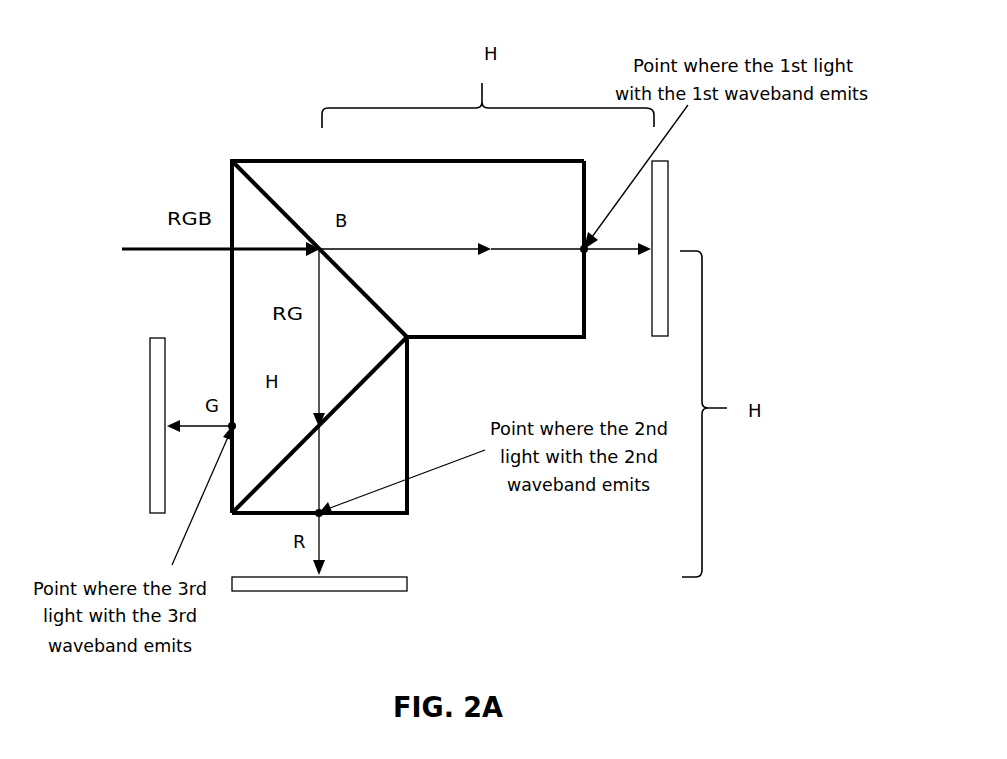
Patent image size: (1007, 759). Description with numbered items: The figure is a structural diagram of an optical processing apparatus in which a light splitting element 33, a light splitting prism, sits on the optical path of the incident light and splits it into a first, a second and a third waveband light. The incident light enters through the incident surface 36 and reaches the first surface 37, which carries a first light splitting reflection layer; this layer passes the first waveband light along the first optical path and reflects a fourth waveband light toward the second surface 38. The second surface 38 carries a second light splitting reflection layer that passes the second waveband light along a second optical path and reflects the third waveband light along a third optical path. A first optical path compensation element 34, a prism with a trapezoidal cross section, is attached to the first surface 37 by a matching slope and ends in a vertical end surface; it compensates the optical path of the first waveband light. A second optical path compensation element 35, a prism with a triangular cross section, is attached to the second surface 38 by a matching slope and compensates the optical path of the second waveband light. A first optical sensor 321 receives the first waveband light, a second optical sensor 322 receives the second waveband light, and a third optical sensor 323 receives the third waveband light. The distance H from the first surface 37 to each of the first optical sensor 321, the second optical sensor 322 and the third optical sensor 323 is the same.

The light splitting element 33 is at (253, 212).
The first optical path compensation element 34 is at (490, 192).
The second optical path compensation element 35 is at (378, 446).
The incident surface 36 is at (231, 342).
The first surface 37 is at (288, 212).
The second surface 38 is at (295, 453).
The first optical sensor 321 is at (660, 217).
The second optical sensor 322 is at (380, 583).
The third optical sensor 323 is at (158, 390).